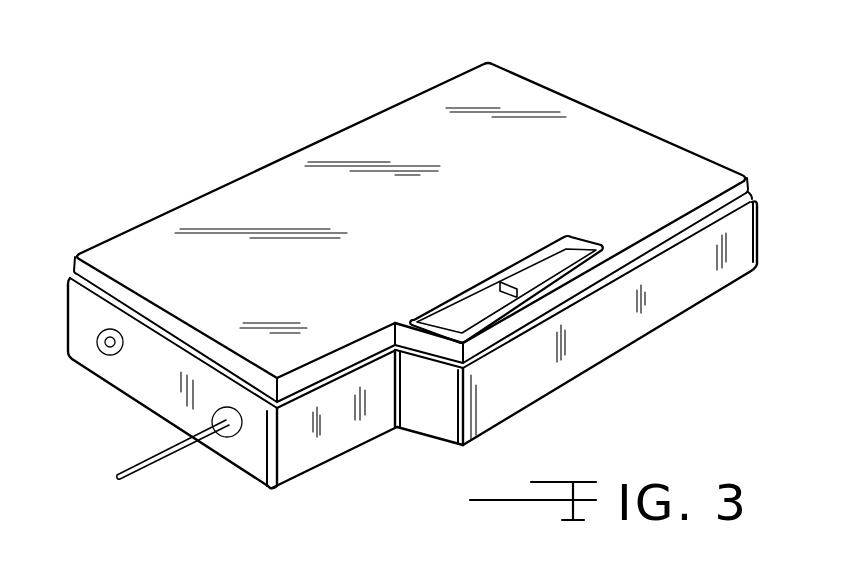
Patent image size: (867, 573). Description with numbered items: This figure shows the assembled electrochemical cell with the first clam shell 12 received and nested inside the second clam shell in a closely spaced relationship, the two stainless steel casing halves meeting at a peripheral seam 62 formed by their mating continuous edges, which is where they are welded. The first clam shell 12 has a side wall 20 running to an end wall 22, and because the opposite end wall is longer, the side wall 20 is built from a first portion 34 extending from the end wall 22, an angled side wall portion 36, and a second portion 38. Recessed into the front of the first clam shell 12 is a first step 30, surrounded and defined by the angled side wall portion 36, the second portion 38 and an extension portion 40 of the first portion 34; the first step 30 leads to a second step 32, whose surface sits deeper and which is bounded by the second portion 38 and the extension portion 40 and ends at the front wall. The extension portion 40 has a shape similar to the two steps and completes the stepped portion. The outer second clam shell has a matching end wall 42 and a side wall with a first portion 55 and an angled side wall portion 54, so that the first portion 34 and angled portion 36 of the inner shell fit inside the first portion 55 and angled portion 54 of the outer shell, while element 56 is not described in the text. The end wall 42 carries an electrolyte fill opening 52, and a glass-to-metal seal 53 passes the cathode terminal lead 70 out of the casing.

The first clam shell 12 is at (548, 107).
The side wall 20 is at (673, 234).
The end wall 22 is at (193, 343).
The first step 30 is at (472, 318).
The second step 32 is at (565, 262).
The first portion 34 is at (342, 363).
The angled side wall portion 36 is at (417, 343).
The second portion 38 is at (495, 337).
The extension portion 40 is at (485, 288).
The end wall 42 is at (148, 384).
The electrolyte fill opening 52 is at (108, 347).
The glass-to-metal seal 53 is at (230, 434).
The angled side wall portion 54 is at (423, 412).
The first portion 55 is at (310, 452).
The housing side wall 56 is at (598, 342).
The peripheral seam 62 is at (762, 200).
The cathode terminal lead 70 is at (118, 480).